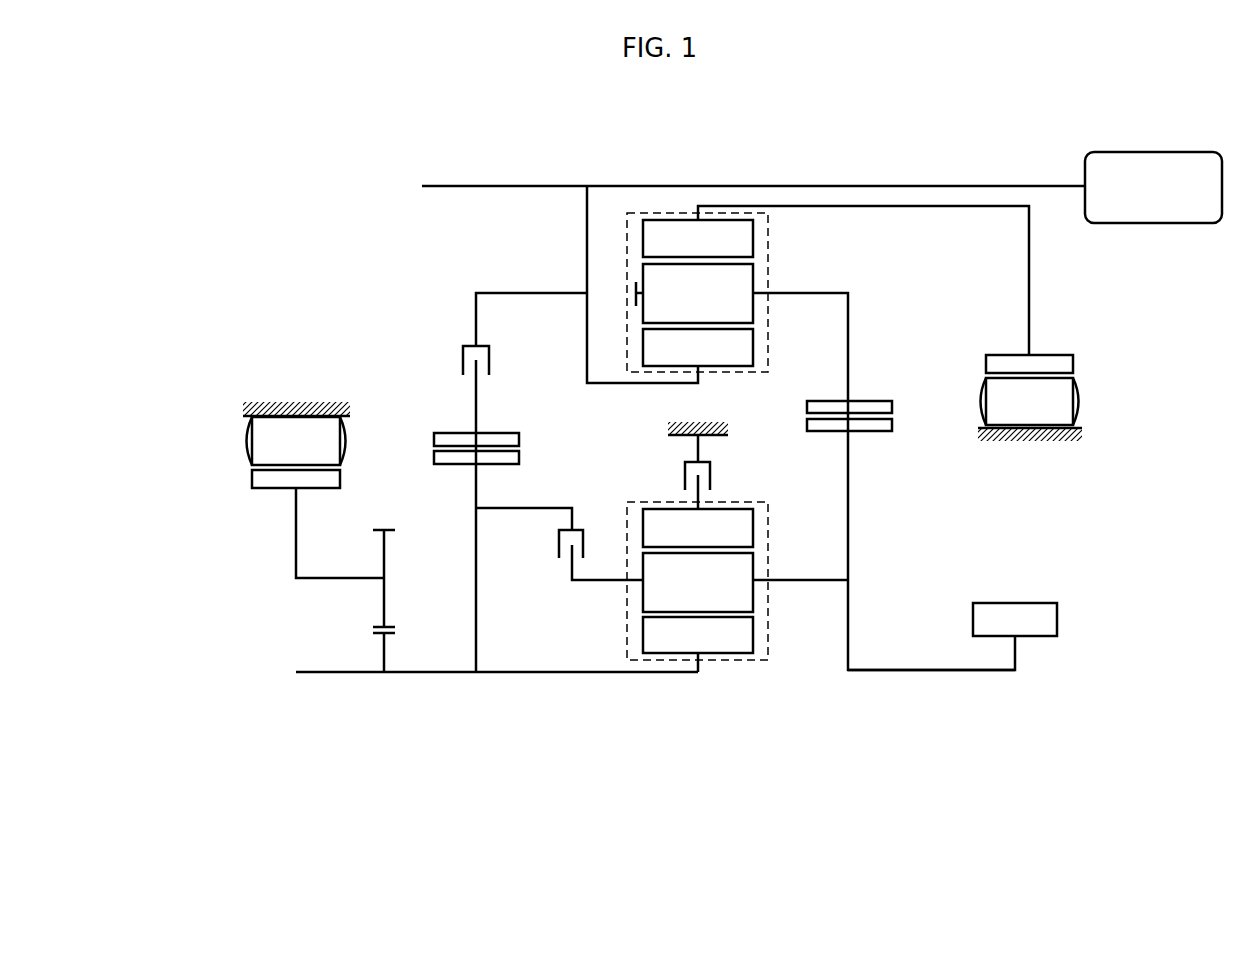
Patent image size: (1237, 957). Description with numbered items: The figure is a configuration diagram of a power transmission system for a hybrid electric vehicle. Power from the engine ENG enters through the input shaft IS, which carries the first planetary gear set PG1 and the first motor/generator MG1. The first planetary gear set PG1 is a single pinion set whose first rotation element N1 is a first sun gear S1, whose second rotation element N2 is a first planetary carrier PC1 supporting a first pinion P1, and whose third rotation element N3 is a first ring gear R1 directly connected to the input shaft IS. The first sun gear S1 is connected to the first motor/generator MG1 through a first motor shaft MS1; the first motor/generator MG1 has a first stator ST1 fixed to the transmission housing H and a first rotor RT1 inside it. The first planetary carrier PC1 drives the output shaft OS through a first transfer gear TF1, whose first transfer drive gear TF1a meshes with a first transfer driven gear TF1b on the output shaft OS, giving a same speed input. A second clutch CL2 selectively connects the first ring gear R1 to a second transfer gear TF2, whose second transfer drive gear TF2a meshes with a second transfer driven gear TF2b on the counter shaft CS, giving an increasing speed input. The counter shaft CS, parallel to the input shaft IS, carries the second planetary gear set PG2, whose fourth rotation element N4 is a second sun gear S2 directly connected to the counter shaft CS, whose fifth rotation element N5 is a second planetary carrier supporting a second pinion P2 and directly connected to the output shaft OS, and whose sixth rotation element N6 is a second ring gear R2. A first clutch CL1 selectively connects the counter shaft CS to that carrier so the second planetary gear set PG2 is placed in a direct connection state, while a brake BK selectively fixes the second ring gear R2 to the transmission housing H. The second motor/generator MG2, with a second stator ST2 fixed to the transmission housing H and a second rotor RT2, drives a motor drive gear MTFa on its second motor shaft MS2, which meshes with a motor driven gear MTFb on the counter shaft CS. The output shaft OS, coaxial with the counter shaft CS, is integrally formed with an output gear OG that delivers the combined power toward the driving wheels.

The engine ENG is at (1153, 187).
The input shaft IS is at (868, 185).
The first motor shaft MS1 is at (973, 205).
The first planetary gear set PG1 is at (630, 288).
The first rotation element N1 is at (698, 238).
The first sun gear S1 is at (698, 238).
The first pinion P1 is at (694, 293).
The third rotation element N3 is at (698, 347).
The first ring gear R1 is at (698, 347).
The second rotation element N2 is at (884, 449).
The first planetary carrier PC1 is at (817, 292).
The second clutch CL2 is at (457, 340).
The second transfer gear TF2 is at (538, 447).
The second transfer drive gear TF2a is at (520, 439).
The second transfer driven gear TF2b is at (520, 458).
The first clutch CL1 is at (554, 553).
The second planetary gear set PG2 is at (697, 630).
The sixth rotation element N6 is at (698, 528).
The second ring gear R2 is at (698, 528).
The second pinion P2 is at (698, 582).
The fourth rotation element N4 is at (698, 635).
The second sun gear S2 is at (698, 635).
The fifth rotation element N5 is at (800, 639).
The counter shaft CS is at (548, 674).
The brake BK is at (718, 475).
The transmission housing H is at (296, 402).
The first motor/generator MG1 is at (1097, 387).
The first rotor RT1 is at (1075, 364).
The first stator ST1 is at (1082, 403).
The first transfer gear TF1 is at (887, 475).
The first transfer drive gear TF1a is at (893, 405).
The first transfer driven gear TF1b is at (858, 464).
The output gear OG is at (1015, 619).
The output shaft OS is at (930, 673).
The second motor/generator MG2 is at (230, 455).
The second stator ST2 is at (248, 441).
The second rotor RT2 is at (250, 479).
The second motor shaft MS2 is at (330, 579).
The motor drive gear MTFa is at (386, 598).
The motor driven gear MTFb is at (386, 652).